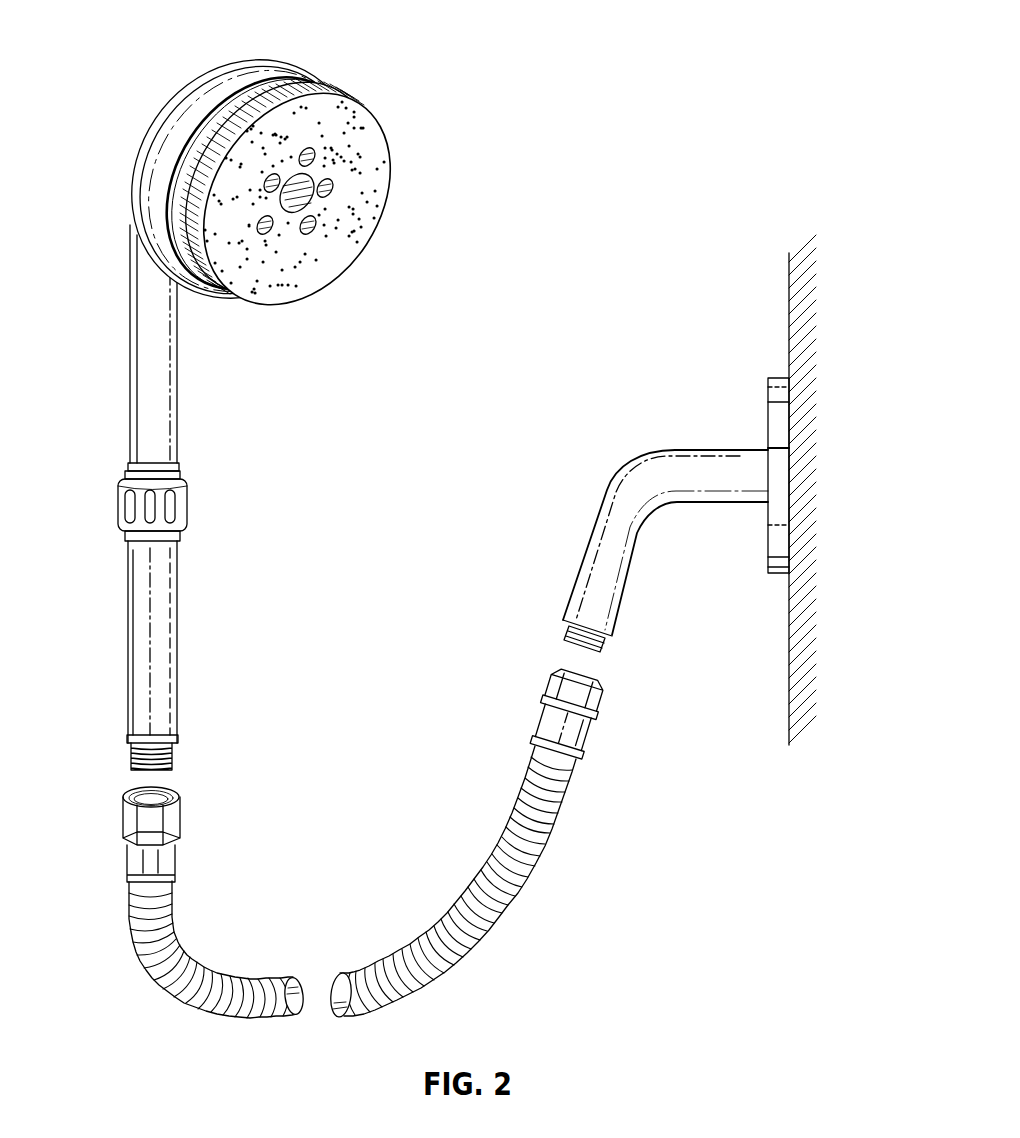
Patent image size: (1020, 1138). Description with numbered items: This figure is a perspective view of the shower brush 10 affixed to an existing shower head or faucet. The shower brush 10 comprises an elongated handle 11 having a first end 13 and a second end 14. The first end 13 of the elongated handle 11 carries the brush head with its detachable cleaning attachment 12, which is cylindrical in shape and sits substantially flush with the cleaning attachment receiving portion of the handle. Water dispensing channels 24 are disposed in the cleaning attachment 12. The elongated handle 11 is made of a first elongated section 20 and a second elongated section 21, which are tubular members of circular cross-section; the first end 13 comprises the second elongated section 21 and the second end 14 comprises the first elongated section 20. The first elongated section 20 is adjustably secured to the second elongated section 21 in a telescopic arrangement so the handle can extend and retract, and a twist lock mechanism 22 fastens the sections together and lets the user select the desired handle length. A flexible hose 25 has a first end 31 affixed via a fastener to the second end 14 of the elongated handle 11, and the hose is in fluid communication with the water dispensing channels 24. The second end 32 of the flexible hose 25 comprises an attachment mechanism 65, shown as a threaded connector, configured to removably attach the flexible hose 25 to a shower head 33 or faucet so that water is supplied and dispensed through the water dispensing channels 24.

The shower brush 10 is at (105, 94).
The elongated handle 11 is at (148, 272).
The detachable cleaning attachment 12 is at (368, 113).
The first end 13 is at (148, 134).
The second end 14 is at (160, 729).
The first elongated section 20 is at (153, 620).
The second elongated section 21 is at (148, 377).
The twist lock mechanism 22 is at (172, 509).
The water dispensing channels 24 is at (335, 184).
The flexible hose 25 is at (505, 926).
The first end 31 is at (160, 852).
The second end 32 is at (593, 739).
The shower head 33 is at (600, 486).
The attachment mechanism 65 is at (540, 690).